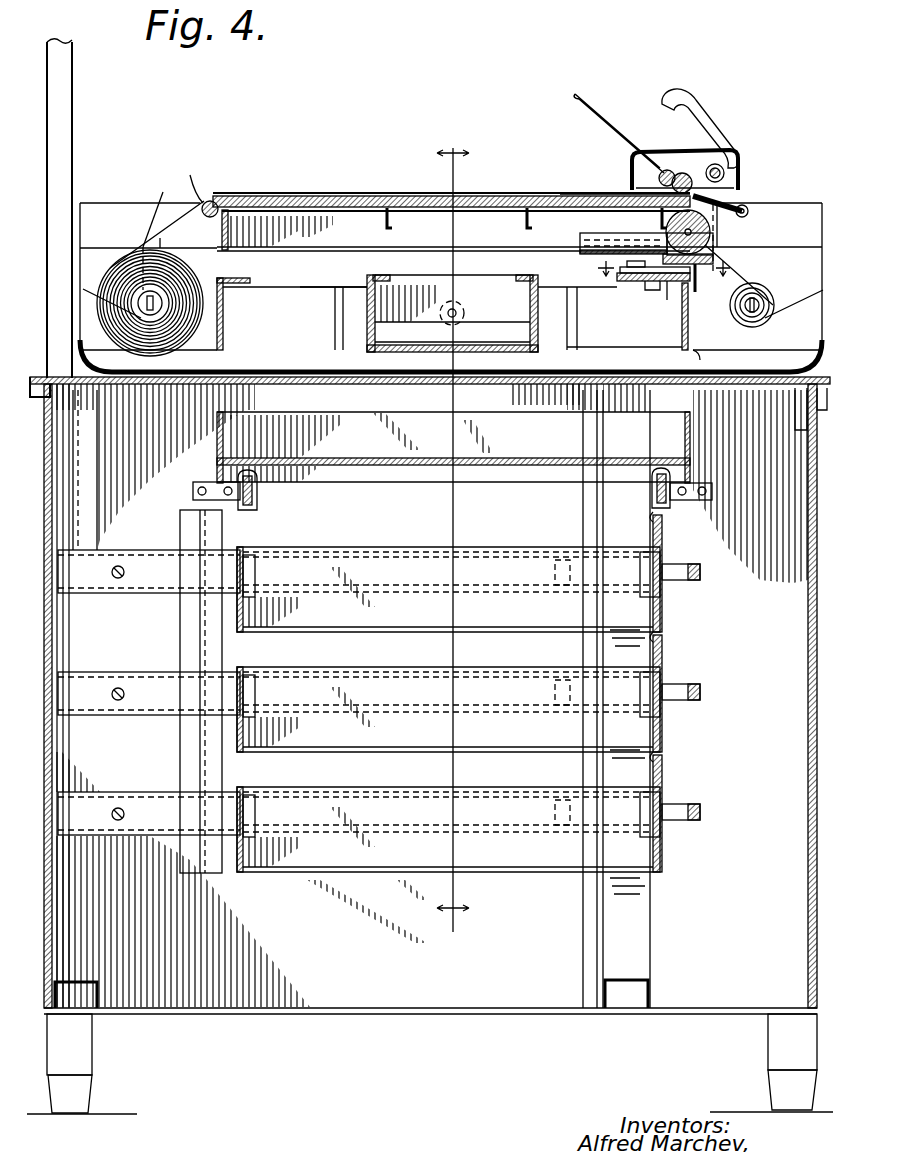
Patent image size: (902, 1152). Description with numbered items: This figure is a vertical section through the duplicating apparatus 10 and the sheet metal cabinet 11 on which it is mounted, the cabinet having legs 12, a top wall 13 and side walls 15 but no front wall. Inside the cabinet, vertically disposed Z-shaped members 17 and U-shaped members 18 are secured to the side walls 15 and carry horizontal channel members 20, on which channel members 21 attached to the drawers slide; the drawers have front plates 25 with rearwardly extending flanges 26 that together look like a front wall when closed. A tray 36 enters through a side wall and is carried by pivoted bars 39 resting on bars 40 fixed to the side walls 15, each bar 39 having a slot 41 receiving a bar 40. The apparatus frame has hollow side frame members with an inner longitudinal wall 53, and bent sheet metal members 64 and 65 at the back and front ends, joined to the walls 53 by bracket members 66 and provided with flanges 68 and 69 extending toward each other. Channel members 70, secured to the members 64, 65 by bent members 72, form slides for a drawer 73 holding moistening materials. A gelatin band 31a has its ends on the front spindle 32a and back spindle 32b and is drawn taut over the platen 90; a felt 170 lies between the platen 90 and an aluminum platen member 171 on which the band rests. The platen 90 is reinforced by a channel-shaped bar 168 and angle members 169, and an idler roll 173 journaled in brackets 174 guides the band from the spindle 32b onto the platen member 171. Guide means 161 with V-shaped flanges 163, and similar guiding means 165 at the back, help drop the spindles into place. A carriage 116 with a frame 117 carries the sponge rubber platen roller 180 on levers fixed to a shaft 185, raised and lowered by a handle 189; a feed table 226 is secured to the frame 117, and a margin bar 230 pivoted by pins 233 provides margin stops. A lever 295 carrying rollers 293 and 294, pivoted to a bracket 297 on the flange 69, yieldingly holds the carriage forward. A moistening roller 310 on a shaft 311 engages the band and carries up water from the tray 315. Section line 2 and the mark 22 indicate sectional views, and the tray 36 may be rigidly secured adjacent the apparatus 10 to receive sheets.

The section line 2- 2 is at (453, 528).
The duplicating apparatus 10 is at (122, 203).
The cabinet 11 is at (308, 1014).
The legs 12 is at (77, 1053).
The top wall 13 is at (385, 383).
The side walls 15 is at (517, 985).
The Z-shaped members 17 is at (224, 527).
The U-shaped members 18 is at (635, 918).
The channel members 20 is at (398, 553).
The channel members 21 is at (138, 557).
The section line 22- 22 is at (651, 253).
The front plates 25 is at (662, 612).
The flanges 26 is at (655, 523).
The gelatin band 31a is at (740, 236).
The spindle 32a is at (760, 293).
The spindle 32b is at (162, 300).
The tray 36 is at (443, 448).
The bars 39 is at (240, 473).
The bars 40 is at (255, 504).
The slot 41 is at (253, 496).
The inner longitudinal wall 53 is at (732, 337).
The bent sheet metal member 64 is at (224, 323).
The bent sheet metal member 65 is at (688, 325).
The bracket members 66 is at (103, 350).
The flange 68 is at (248, 278).
The flange 69 is at (680, 275).
The channel members 70 is at (383, 277).
The bent sheet metal members 72 is at (303, 297).
The drawer 73 is at (468, 350).
The platen 90 is at (263, 213).
The carriage 116 is at (657, 147).
The carriage frame 117 is at (666, 170).
The guide means 161 is at (777, 257).
The flanges 163 is at (83, 288).
The guiding means 165 is at (88, 272).
The channel-shaped bar 168 is at (181, 178).
The angle members 169 is at (390, 223).
The felt 170 is at (328, 195).
The platen member 171 is at (592, 195).
The idler roll 173 is at (211, 200).
The brackets 174 is at (230, 212).
The platen roller 180 is at (683, 173).
The shaft 185 is at (727, 170).
The handle 189 is at (693, 93).
The feed table 226 is at (590, 105).
The margin bar 230 is at (730, 203).
The pins 233 is at (747, 212).
The roller 293 is at (675, 290).
The roller 294 is at (623, 277).
The lever 295 is at (647, 280).
The bracket 297 is at (657, 282).
The roller 310 is at (707, 227).
The shaft 311 is at (693, 267).
The tray 315 is at (583, 231).